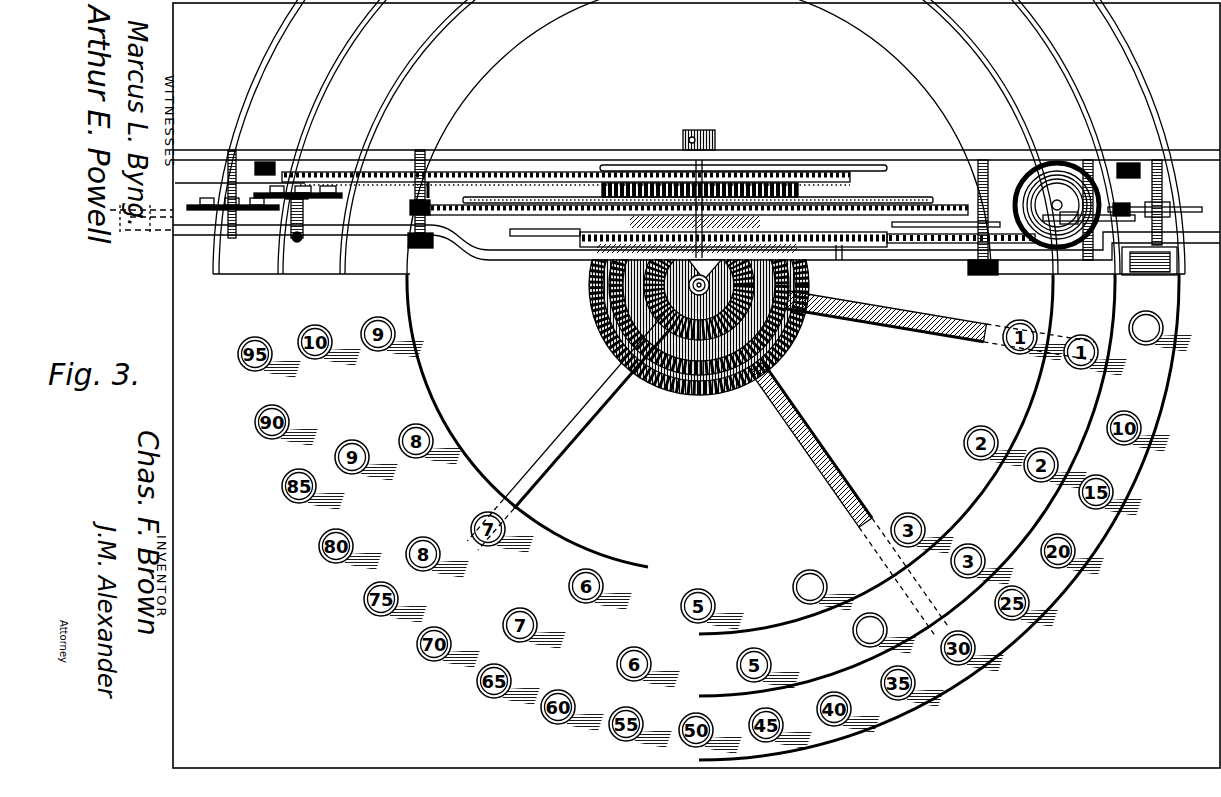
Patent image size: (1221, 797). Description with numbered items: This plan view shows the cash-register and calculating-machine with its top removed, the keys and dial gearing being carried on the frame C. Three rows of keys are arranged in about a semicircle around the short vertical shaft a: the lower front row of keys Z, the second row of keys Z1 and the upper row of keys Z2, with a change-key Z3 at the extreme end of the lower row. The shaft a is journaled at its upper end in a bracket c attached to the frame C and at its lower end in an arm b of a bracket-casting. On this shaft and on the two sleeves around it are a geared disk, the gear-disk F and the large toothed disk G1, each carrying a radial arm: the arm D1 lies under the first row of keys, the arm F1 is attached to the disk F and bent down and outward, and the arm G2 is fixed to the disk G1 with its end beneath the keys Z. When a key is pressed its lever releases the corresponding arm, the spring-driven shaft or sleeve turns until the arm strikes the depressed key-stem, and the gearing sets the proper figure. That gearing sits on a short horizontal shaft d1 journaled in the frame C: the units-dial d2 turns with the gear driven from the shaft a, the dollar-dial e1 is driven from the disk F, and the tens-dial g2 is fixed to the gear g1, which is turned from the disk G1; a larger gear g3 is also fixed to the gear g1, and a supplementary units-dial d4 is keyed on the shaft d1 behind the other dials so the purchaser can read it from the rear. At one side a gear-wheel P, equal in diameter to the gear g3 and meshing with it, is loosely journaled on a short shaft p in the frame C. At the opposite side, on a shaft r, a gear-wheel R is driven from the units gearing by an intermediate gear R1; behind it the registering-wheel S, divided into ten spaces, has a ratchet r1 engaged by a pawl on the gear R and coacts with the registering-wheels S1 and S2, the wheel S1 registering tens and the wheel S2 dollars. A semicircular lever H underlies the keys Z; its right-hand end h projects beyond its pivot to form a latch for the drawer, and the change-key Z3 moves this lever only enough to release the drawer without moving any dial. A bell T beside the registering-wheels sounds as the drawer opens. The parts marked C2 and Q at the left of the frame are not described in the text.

The gear-wheel P is at (377, 172).
The short shaft p is at (430, 196).
The gear g1 is at (593, 183).
The tens-dial g2 is at (525, 198).
The larger gear-wheel g3 is at (860, 176).
The short horizontal shaft d1 is at (716, 140).
The units-dial d2 is at (540, 235).
The supplementary units-dial d4 is at (818, 165).
The short vertical shaft a is at (607, 262).
The dollar-dial e1 is at (477, 218).
The frame C is at (487, 261).
The frame extension C2 is at (159, 232).
The slide bars Q is at (328, 198).
The shaft r is at (976, 180).
The ratchet r1 is at (958, 243).
The gear-wheel R is at (975, 243).
The intermediate gear R1 is at (863, 244).
The registering-wheel S is at (992, 228).
The registering-wheel S1 is at (1118, 215).
The registering-wheel S2 is at (1172, 212).
The bell T is at (1057, 205).
The right-hand end of lever h is at (1178, 256).
The semicircular lever H is at (1148, 274).
The large disk G1 is at (681, 285).
The gear-disk F is at (613, 340).
The bracket c is at (686, 284).
The arm of bracket-casting b is at (712, 290).
The arm D1 is at (592, 430).
The arm G2 is at (796, 422).
The arm F1 is at (897, 327).
The keys Z is at (1003, 682).
The keys Z1 is at (853, 633).
The keys Z2 is at (793, 588).
The change-key Z3 is at (1146, 345).